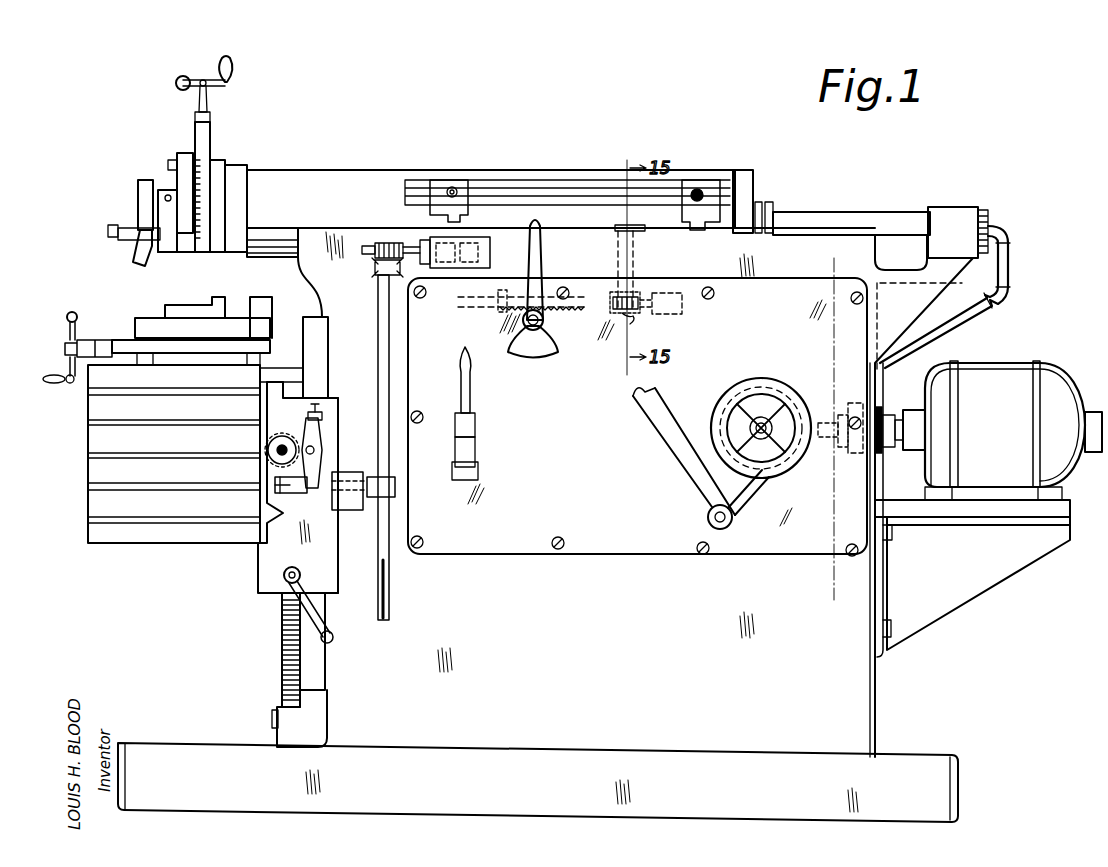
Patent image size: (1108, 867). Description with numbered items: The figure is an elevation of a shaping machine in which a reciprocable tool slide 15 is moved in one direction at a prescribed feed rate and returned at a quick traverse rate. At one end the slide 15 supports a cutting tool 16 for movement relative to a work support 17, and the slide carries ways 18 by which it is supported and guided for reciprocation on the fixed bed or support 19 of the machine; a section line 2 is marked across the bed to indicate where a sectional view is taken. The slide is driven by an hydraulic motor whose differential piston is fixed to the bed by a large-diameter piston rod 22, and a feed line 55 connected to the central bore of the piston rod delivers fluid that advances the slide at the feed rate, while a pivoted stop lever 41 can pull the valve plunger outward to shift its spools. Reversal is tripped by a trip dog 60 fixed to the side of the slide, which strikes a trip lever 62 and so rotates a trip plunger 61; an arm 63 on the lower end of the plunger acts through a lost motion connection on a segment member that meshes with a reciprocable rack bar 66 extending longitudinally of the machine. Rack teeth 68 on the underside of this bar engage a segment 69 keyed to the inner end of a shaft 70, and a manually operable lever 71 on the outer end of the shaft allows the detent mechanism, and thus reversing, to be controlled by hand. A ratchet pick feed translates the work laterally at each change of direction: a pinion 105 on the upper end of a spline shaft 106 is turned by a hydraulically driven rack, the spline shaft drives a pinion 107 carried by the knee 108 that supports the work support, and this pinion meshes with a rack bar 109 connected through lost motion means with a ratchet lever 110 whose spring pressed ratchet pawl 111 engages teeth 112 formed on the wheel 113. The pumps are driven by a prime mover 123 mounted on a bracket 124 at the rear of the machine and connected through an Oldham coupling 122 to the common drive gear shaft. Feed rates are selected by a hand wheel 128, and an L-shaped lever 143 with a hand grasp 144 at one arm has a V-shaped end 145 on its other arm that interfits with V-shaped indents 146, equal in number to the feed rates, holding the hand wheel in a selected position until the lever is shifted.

The section line 2- 2 is at (825, 275).
The tool slide 15 is at (262, 188).
The cutting tool 16 is at (138, 196).
The work support 17 is at (100, 404).
The ways 18 is at (274, 250).
The fixed bed or support 19 is at (870, 670).
The piston rod 22 is at (872, 212).
The stop lever 41 is at (468, 391).
The feed line 55 is at (1008, 272).
The trip dog 60 is at (690, 188).
The trip plunger 61 is at (615, 232).
The trip lever 62 is at (622, 226).
The arm 63 is at (636, 294).
The rack bar 66 is at (585, 309).
The rack teeth 68 is at (513, 314).
The segment 69 is at (518, 321).
The shaft 70 is at (526, 346).
The manually operable lever 71 is at (540, 216).
The pinion 105 is at (388, 241).
The spline shaft 106 is at (390, 592).
The pinion 107 is at (378, 477).
The knee 108 is at (270, 541).
The rack bar 109 is at (347, 498).
The ratchet lever 110 is at (277, 484).
The ratchet pawl 111 is at (312, 426).
The teeth 112 is at (287, 437).
The wheel 113 is at (325, 460).
The Oldham coupling 122 is at (886, 410).
The prime mover 123 is at (985, 385).
The bracket 124 is at (1020, 556).
The hand wheel 128 is at (724, 401).
The L-shaped lever 143 is at (695, 479).
The hand grasp 144 is at (641, 399).
The V-shaped end 145 is at (770, 472).
The V-shaped indents 146 is at (758, 396).